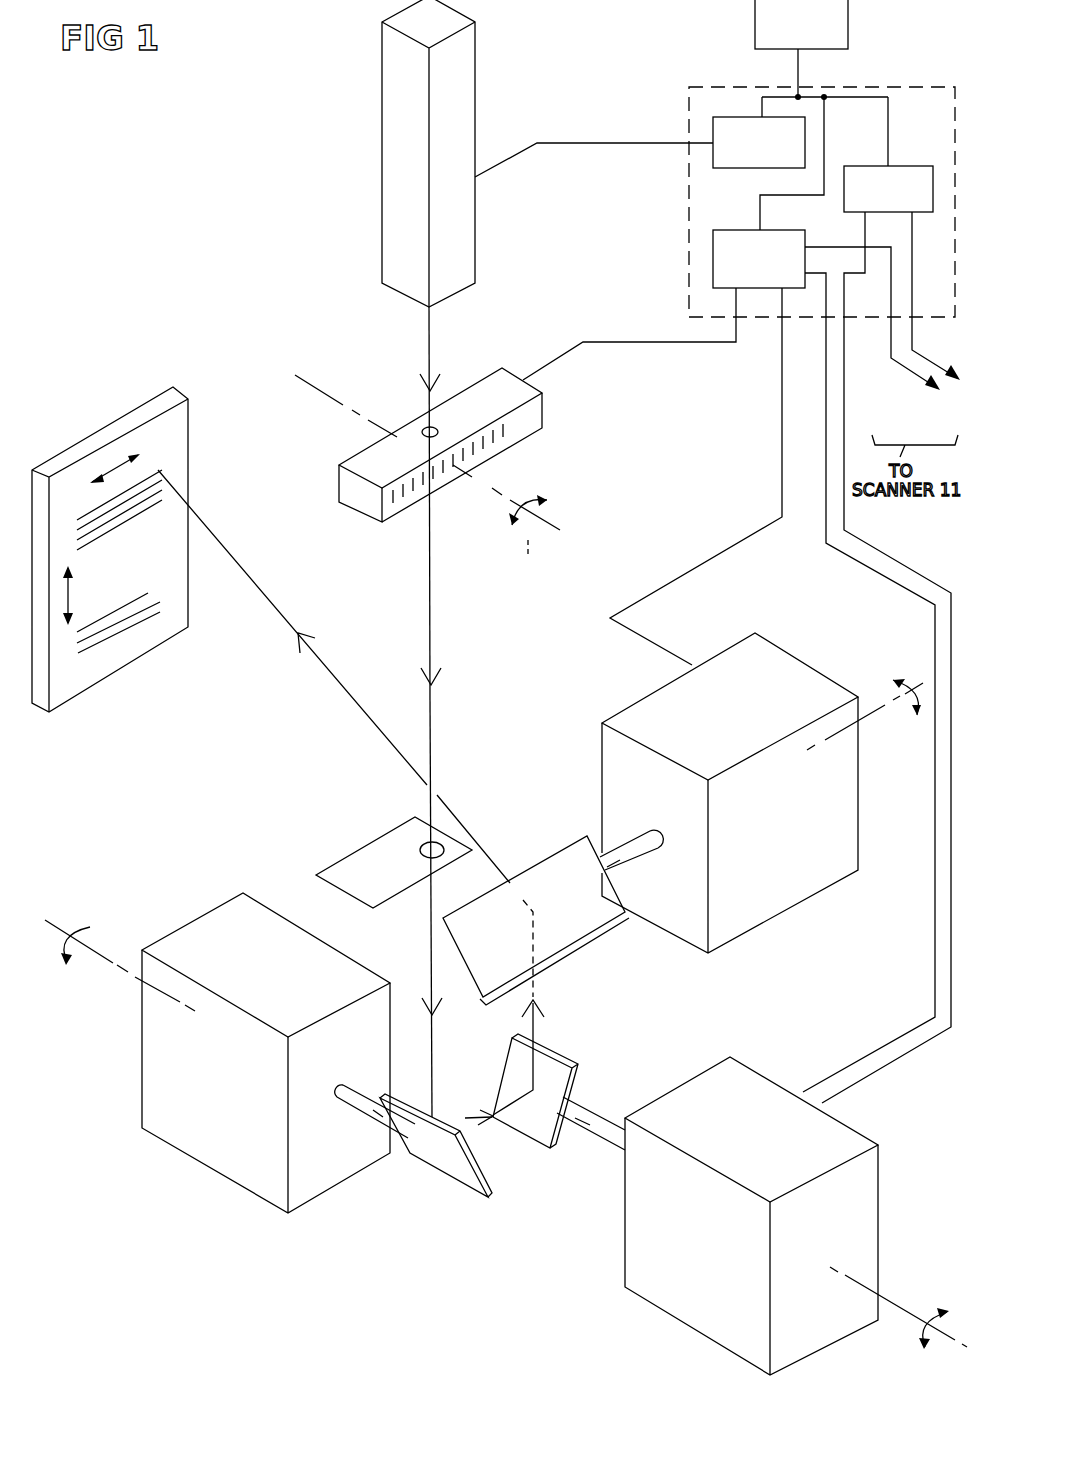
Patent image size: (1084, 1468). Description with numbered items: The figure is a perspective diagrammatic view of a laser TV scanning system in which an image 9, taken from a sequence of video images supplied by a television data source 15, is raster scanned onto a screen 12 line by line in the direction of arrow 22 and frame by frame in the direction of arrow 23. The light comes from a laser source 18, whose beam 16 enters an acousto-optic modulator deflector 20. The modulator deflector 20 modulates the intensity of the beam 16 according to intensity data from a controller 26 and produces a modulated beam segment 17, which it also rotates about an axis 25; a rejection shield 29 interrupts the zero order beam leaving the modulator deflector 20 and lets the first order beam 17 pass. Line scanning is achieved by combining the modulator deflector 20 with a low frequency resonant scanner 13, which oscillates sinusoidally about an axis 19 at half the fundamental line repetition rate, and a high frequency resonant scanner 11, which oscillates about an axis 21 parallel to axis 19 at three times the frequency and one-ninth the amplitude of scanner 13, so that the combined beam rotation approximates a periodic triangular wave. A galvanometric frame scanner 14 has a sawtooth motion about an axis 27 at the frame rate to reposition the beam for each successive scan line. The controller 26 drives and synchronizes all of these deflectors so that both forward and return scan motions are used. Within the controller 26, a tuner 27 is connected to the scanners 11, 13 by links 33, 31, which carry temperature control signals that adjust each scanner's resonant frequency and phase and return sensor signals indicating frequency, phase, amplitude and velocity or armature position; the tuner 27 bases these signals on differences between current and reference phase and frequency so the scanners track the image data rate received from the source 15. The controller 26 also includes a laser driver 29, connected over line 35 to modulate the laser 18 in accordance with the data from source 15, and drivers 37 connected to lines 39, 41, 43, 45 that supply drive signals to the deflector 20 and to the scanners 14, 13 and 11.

The image 9 is at (178, 463).
The high frequency resonant scanner 11 is at (240, 1190).
The screen 12 is at (161, 392).
The low frequency resonant scanner 13 is at (653, 1308).
The galvanometric frame scanner 14 is at (800, 905).
The television data source 15 is at (755, 10).
The beam 16 is at (426, 346).
The modulated beam segment 17 is at (433, 740).
The laser source 18 is at (382, 152).
The axis 19 is at (900, 1308).
The acousto-optic modulator deflector 20 is at (360, 513).
The axis 21 is at (98, 948).
The arrow 22 is at (115, 465).
The arrow 23 is at (70, 600).
The axis 25 is at (427, 477).
The controller 26 is at (932, 82).
The tuner 27 is at (910, 165).
The laser driver 29 is at (740, 116).
The link 31 is at (844, 428).
The link 33 is at (947, 387).
The line 35 is at (537, 150).
The drivers 37 is at (737, 230).
The line 39 is at (555, 362).
The line 41 is at (782, 433).
The line 43 is at (826, 428).
The line 45 is at (918, 385).